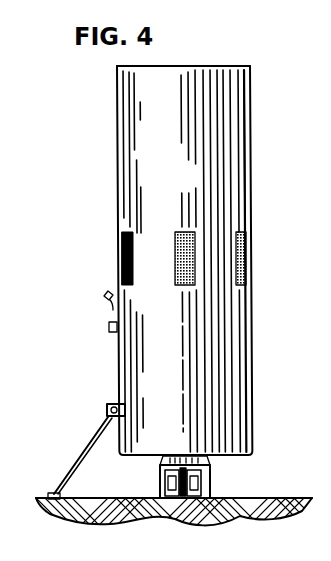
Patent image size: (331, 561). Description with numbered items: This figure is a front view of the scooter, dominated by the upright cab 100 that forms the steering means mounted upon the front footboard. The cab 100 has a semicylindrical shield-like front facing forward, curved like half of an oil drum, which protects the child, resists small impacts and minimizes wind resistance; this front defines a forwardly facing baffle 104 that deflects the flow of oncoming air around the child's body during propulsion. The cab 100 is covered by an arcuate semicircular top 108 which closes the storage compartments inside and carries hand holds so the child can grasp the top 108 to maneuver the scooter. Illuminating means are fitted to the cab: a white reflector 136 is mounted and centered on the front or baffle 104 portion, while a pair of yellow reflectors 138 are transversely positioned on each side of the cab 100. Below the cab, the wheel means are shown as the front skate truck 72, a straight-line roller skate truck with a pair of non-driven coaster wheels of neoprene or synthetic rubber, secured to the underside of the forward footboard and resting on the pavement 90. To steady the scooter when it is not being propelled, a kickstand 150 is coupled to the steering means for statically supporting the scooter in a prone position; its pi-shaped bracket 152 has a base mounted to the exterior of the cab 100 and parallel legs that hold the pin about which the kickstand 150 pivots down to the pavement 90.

The upright cab 100 is at (249, 456).
The top 108 is at (213, 72).
The baffle 104 is at (196, 188).
The yellow reflectors 138 is at (122, 257).
The white reflector 136 is at (187, 285).
The bracket 152 is at (108, 405).
The kickstand 150 is at (64, 466).
The front skate truck 72 is at (210, 491).
The pavement 90 is at (128, 499).